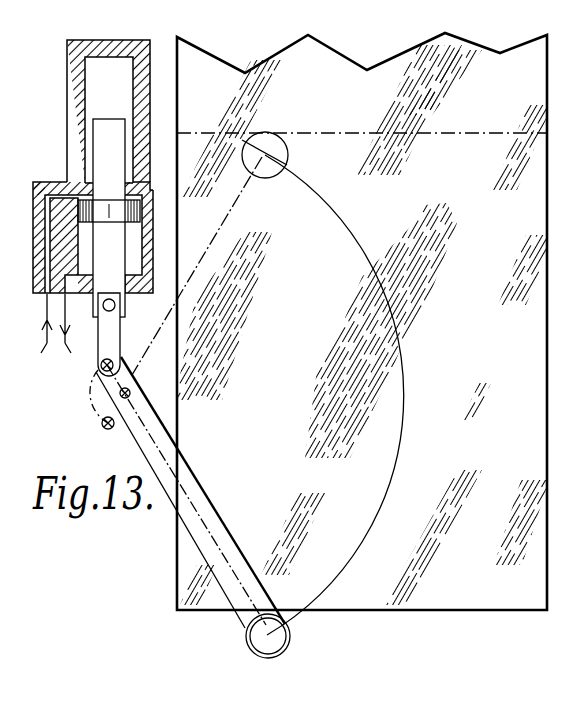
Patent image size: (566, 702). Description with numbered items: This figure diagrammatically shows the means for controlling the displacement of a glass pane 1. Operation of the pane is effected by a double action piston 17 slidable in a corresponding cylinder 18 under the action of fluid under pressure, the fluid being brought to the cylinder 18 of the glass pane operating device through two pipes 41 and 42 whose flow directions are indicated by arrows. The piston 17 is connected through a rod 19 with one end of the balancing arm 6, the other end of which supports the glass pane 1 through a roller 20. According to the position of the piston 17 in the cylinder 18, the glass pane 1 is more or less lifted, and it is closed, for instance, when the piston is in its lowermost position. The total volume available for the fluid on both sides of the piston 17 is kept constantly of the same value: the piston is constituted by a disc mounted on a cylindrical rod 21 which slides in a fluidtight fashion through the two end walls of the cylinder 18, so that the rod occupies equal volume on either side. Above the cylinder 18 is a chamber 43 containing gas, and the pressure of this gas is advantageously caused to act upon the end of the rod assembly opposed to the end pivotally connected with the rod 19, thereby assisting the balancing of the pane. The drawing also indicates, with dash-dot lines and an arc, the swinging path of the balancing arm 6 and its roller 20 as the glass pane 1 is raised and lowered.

The glass pane 1 is at (505, 603).
The balancing arm 6 is at (188, 475).
The double action piston 17 is at (108, 213).
The cylinder 18 is at (138, 247).
The rod 19 is at (110, 332).
The roller 20 is at (291, 637).
The cylindrical rod 21 is at (107, 268).
The pipe 41 is at (38, 335).
The pipe 42 is at (66, 335).
The chamber 43 is at (96, 86).